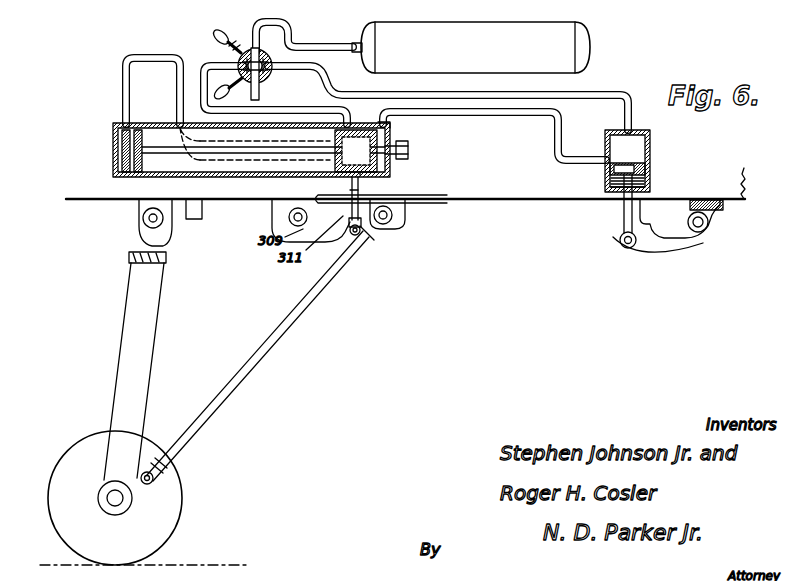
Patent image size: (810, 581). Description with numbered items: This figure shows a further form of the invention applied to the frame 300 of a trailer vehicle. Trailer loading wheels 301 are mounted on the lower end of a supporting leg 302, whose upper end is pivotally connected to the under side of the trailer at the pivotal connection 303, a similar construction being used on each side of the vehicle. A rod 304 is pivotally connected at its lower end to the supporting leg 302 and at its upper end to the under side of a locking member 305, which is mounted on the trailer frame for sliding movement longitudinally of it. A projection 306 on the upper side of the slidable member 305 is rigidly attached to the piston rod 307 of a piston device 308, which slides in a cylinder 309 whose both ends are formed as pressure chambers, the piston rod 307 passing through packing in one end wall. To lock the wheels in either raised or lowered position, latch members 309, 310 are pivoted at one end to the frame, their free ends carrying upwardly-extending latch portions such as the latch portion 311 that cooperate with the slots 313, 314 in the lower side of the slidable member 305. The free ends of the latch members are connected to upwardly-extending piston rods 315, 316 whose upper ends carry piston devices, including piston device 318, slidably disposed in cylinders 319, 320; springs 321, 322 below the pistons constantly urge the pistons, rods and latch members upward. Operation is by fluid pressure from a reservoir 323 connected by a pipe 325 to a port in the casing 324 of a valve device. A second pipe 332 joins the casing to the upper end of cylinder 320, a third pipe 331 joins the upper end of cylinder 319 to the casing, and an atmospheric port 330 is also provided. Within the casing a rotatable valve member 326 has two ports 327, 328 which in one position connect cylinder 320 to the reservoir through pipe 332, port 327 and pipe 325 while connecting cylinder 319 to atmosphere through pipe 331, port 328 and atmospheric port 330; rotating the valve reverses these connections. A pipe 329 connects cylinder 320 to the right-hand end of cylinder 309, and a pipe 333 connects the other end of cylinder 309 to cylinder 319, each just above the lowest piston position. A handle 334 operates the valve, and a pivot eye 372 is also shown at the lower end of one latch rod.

The frame 300 is at (118, 187).
The trailer loading wheels 301 is at (163, 529).
The supporting leg 302 is at (137, 341).
The pivotal connection 303 is at (143, 218).
The rod 304 is at (248, 366).
The locking member 305 is at (448, 198).
The projection 306 is at (410, 155).
The piston rod 307 is at (406, 150).
The piston device 308 is at (132, 138).
The cylinder 309 is at (120, 156).
The latch member 310 is at (697, 238).
The latch portion 311 is at (338, 148).
The slot 313 is at (336, 177).
The slot 314 is at (433, 207).
The piston rod 315 is at (359, 190).
The piston rod 316 is at (630, 201).
The piston device 318 is at (646, 170).
The cylinder 319 is at (386, 131).
The cylinder 320 is at (650, 142).
The spring 321 is at (398, 172).
The spring 322 is at (607, 181).
The fluid pressure reservoir 323 is at (443, 34).
The valve casing 324 is at (230, 44).
The pipe 325 is at (326, 46).
The rotatable valve member 326 is at (272, 61).
The port 327 is at (269, 72).
The port 328 is at (240, 62).
The pipe 329 is at (559, 125).
The atmospheric port 330 is at (259, 95).
The pipe 331 is at (263, 107).
The pipe 332 is at (627, 92).
The pipe 333 is at (122, 96).
The handle 334 is at (214, 31).
The eye 372 is at (646, 217).